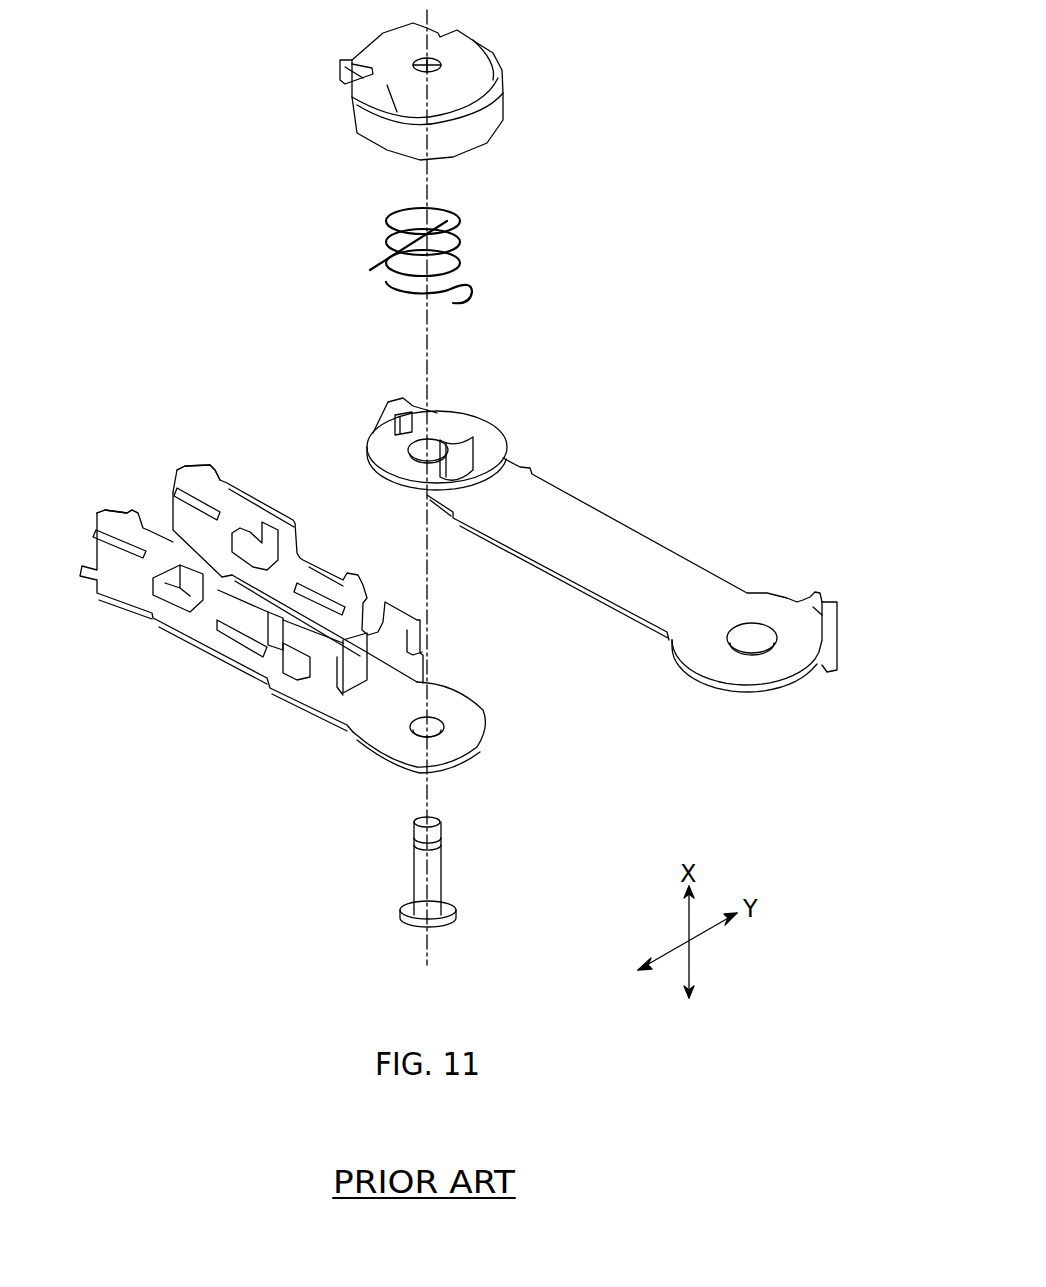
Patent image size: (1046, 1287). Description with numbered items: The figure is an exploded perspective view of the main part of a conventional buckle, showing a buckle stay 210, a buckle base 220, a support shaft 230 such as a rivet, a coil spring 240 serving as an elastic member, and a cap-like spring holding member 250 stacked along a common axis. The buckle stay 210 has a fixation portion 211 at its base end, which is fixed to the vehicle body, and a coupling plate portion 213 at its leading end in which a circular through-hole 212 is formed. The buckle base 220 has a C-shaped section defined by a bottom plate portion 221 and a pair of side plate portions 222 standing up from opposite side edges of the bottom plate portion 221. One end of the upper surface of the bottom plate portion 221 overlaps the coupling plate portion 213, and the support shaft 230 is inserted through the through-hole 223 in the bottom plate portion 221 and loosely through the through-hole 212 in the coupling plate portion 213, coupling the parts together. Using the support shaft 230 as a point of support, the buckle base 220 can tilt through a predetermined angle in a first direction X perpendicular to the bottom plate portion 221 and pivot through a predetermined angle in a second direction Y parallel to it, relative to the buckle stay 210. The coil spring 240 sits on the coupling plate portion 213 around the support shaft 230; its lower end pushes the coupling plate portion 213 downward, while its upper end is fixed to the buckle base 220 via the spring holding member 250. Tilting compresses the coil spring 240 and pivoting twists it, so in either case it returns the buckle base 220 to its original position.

The buckle stay 210 is at (557, 586).
The fixation portion 211 is at (755, 688).
The circular through-hole 212 is at (420, 457).
The coupling plate portion 213 is at (368, 455).
The buckle base 220 is at (330, 637).
The bottom plate portion 221 is at (387, 704).
The side plate portions 222 is at (193, 522).
The through-hole 223 is at (458, 727).
The support shaft 230 is at (438, 868).
The coil spring 240 is at (375, 243).
The spring holding member 250 is at (515, 52).